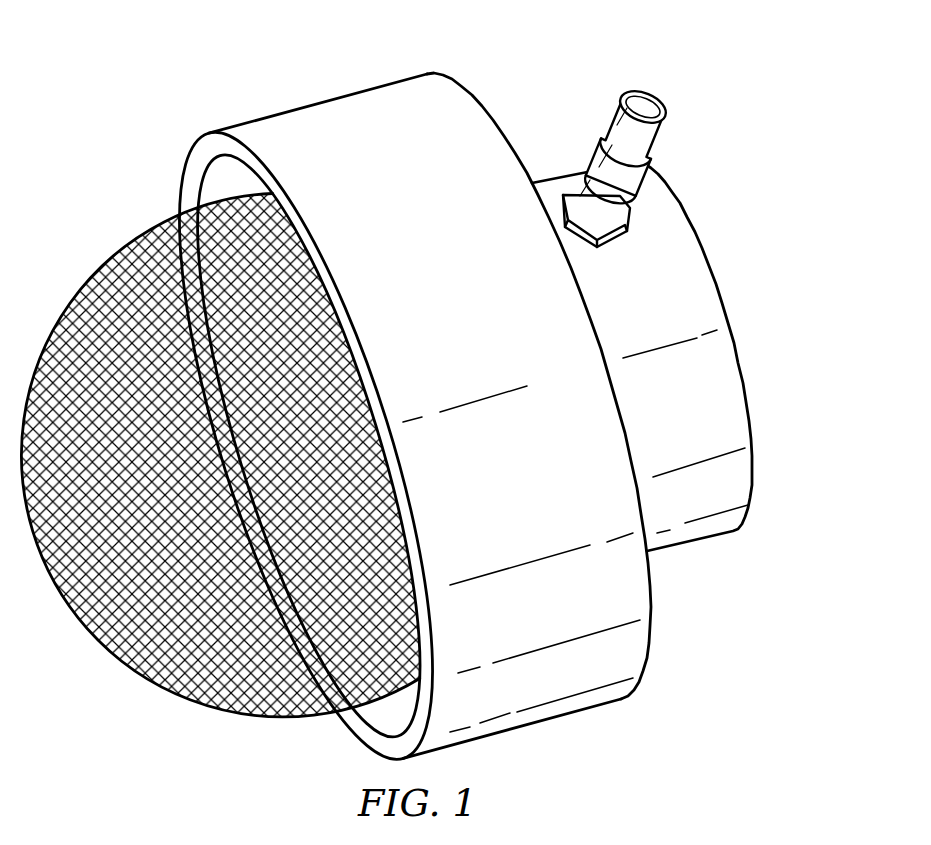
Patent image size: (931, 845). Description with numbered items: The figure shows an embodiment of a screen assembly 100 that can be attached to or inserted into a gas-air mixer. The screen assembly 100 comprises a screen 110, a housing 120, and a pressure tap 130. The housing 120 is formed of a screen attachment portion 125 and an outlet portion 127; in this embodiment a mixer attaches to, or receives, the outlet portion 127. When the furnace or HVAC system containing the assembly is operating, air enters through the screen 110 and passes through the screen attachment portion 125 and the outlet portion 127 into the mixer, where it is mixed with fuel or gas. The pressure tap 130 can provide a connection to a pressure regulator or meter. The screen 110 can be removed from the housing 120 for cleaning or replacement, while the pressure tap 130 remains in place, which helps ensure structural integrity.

The screen assembly 100 is at (165, 28).
The screen 110 is at (110, 258).
The housing 120 is at (722, 624).
The screen attachment portion 125 is at (337, 97).
The outlet portion 127 is at (718, 403).
The pressure tap 130 is at (662, 121).